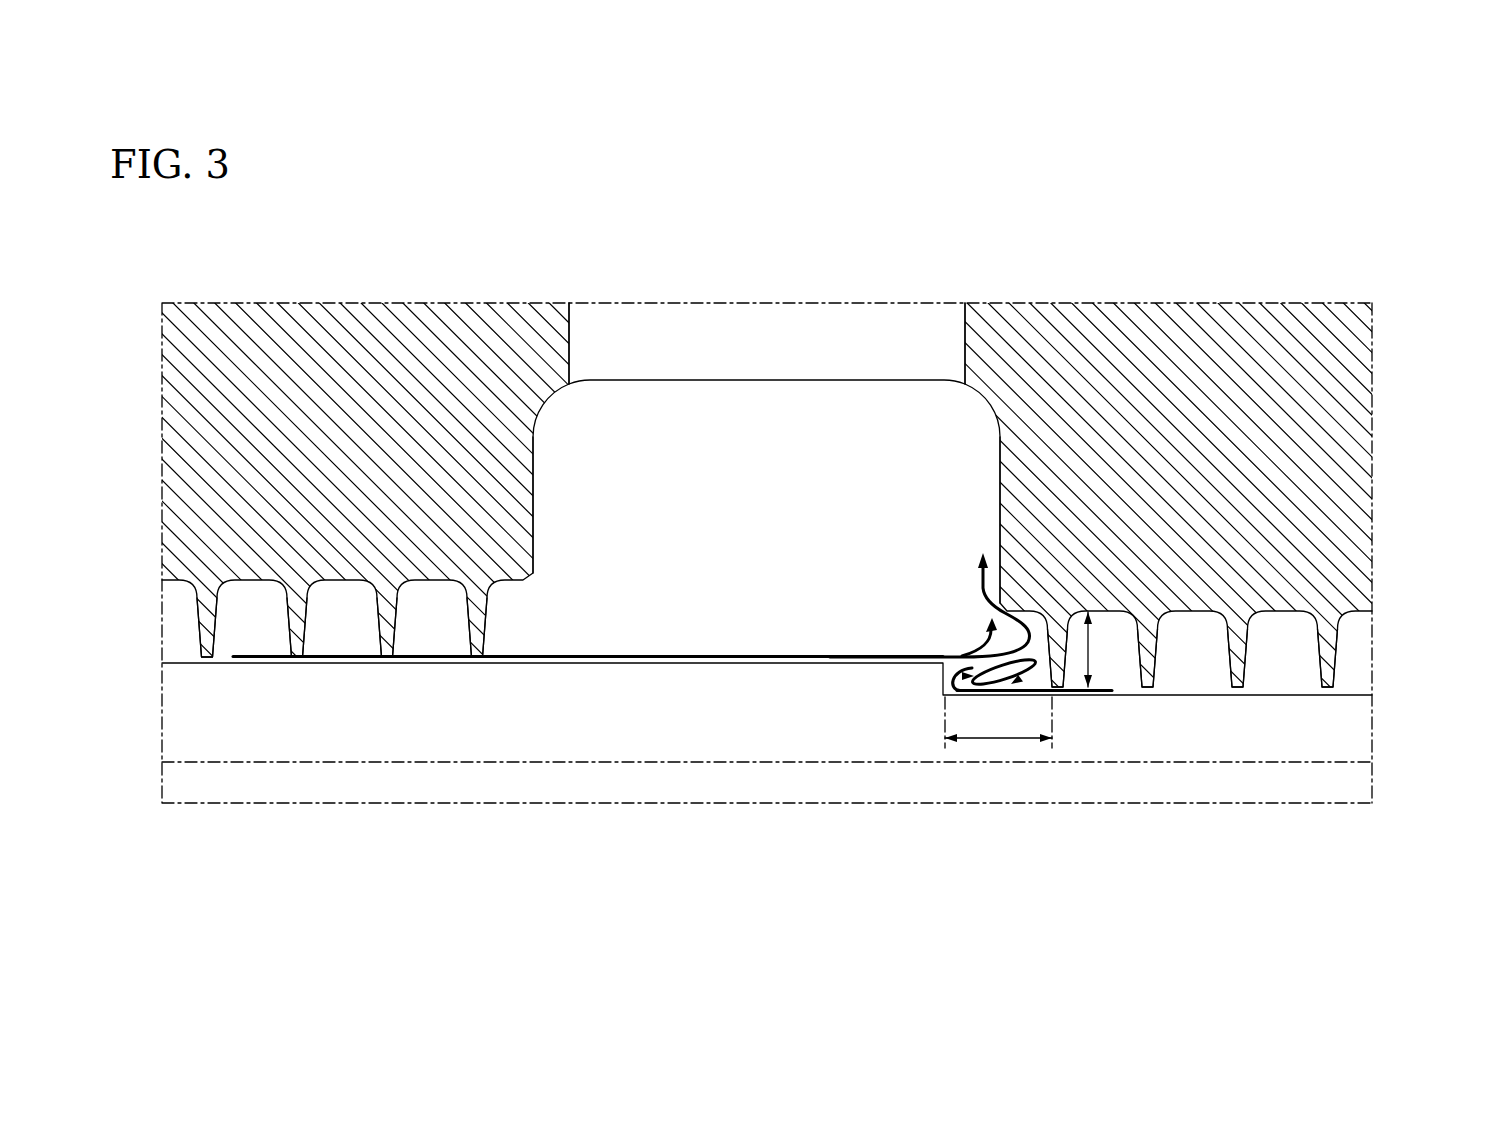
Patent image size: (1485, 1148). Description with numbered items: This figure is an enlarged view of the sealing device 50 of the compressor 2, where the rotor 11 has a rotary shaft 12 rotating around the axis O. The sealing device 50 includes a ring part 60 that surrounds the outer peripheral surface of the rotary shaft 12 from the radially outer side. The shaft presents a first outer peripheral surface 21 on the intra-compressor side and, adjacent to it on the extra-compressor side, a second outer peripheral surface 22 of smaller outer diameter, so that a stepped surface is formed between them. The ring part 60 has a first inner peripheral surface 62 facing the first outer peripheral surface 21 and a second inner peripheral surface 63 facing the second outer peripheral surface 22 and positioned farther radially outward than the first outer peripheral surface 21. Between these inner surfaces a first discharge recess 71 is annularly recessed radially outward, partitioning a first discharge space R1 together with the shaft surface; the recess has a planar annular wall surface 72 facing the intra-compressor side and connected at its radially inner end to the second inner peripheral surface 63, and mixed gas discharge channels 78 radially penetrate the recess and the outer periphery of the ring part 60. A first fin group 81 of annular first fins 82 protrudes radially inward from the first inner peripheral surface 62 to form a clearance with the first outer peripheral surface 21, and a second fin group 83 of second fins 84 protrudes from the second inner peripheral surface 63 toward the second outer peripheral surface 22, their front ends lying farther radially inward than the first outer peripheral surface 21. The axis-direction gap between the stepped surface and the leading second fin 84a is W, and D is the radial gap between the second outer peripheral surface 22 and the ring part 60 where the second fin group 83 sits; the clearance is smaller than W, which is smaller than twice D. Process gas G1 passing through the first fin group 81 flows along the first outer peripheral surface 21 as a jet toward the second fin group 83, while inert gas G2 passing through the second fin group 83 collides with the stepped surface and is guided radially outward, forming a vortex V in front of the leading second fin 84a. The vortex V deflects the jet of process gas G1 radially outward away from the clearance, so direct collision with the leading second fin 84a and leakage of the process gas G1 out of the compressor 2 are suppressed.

The compressor 2 is at (1346, 198).
The sealing device 50 is at (1278, 290).
The ring part 60 is at (1345, 413).
The mixed gas discharge channel 78 is at (571, 338).
The first discharge recess 71 is at (540, 485).
The wall surface 72 is at (1000, 485).
The first fin 82 is at (205, 615).
The second fin 84 is at (1233, 673).
The leading second fin 84a is at (1047, 640).
The rotor 11 is at (160, 736).
The rotary shaft 12 is at (405, 730).
The first outer peripheral surface 21 is at (738, 658).
The second outer peripheral surface 22 is at (1347, 675).
The first fin group 81 is at (184, 654).
The first inner peripheral surface 62 is at (250, 594).
The second inner peripheral surface 63 is at (1273, 626).
The second fin group 83 is at (1315, 710).
The first discharge space R1 is at (617, 440).
The process gas G1 is at (950, 655).
The inert gas G2 is at (953, 680).
The vortex V is at (968, 673).
The radial gap D is at (1096, 649).
The axis-direction gap W is at (998, 722).
The axis O is at (1140, 765).